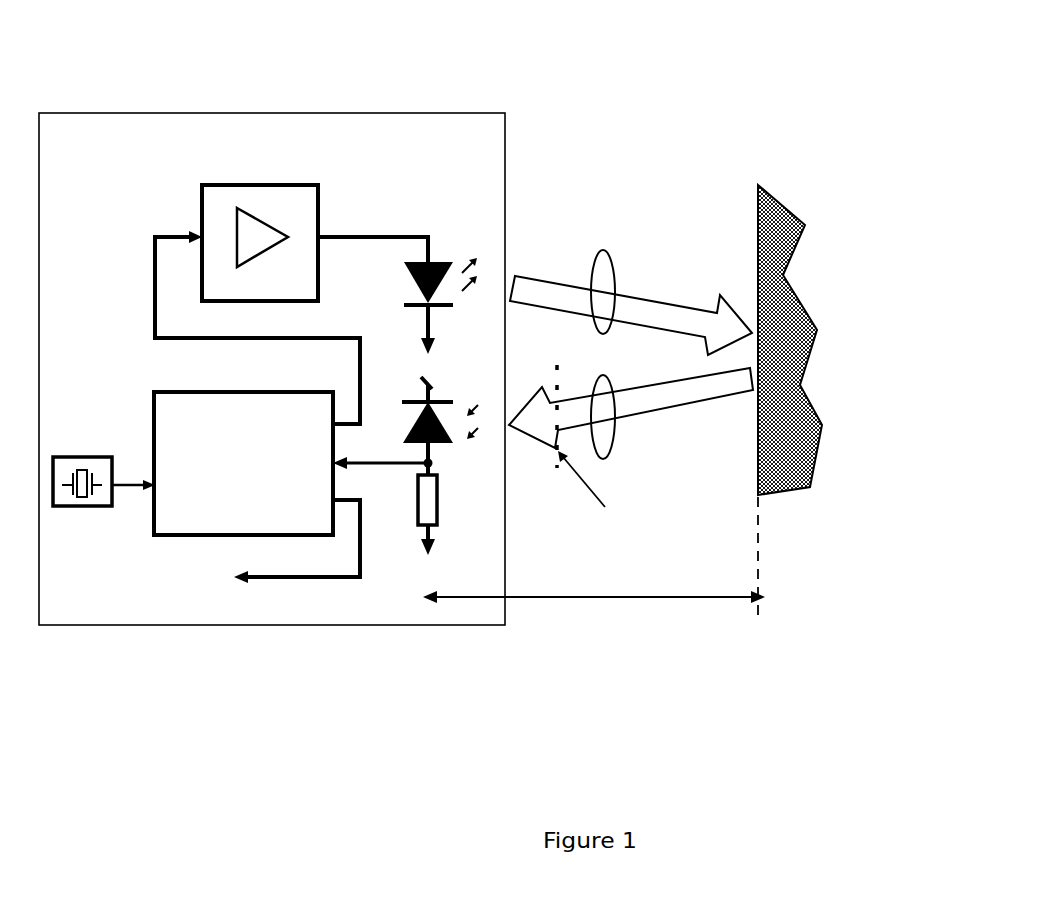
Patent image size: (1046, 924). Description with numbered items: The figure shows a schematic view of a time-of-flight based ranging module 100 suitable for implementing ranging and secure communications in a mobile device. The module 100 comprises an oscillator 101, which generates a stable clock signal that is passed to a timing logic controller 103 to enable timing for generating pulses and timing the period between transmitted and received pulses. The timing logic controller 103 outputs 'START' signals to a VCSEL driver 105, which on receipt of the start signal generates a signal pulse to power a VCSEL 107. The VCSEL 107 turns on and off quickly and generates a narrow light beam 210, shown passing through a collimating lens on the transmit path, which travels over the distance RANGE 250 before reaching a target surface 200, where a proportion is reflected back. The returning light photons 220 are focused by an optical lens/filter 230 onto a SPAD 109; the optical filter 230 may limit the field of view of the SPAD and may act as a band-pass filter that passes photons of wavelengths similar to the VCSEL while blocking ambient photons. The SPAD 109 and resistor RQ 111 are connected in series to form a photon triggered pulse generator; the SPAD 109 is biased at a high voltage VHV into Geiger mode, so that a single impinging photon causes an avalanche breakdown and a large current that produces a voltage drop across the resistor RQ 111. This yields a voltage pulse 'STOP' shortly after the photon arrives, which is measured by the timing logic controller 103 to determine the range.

The ranging module 100 is at (110, 128).
The oscillator 101 is at (80, 506).
The timing logic controller 103 is at (153, 413).
The VCSEL driver 105 is at (202, 222).
The VCSEL 107 is at (408, 277).
The SPAD 109 is at (452, 445).
The resistor RQ 111 is at (418, 513).
The target surface 200 is at (758, 203).
The narrow light beam 210 is at (615, 267).
The returning light photons 220 is at (615, 445).
The optical lens/filter 230 is at (628, 542).
The RANGE 250 is at (594, 629).